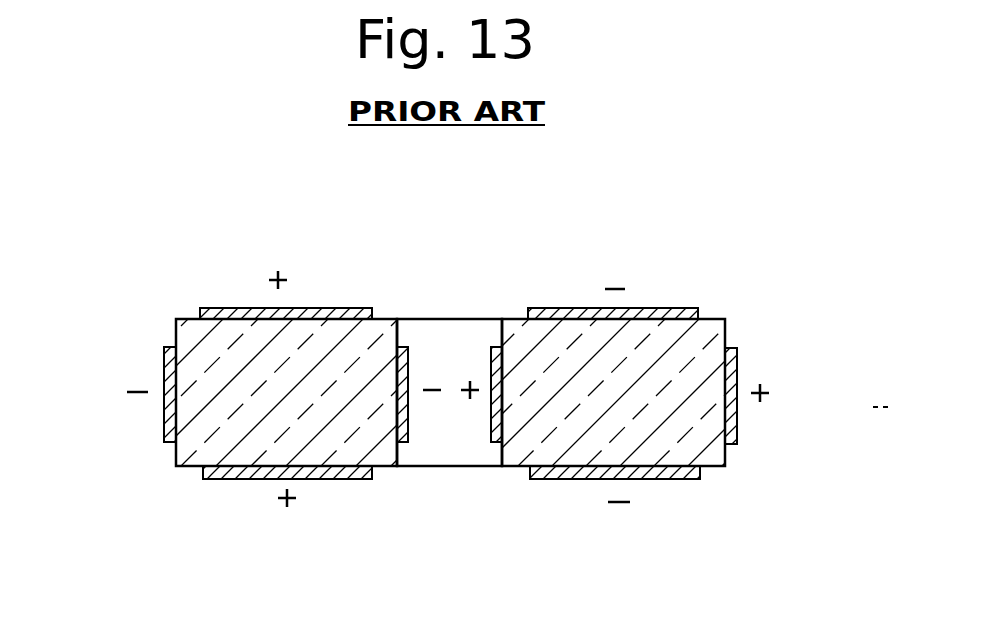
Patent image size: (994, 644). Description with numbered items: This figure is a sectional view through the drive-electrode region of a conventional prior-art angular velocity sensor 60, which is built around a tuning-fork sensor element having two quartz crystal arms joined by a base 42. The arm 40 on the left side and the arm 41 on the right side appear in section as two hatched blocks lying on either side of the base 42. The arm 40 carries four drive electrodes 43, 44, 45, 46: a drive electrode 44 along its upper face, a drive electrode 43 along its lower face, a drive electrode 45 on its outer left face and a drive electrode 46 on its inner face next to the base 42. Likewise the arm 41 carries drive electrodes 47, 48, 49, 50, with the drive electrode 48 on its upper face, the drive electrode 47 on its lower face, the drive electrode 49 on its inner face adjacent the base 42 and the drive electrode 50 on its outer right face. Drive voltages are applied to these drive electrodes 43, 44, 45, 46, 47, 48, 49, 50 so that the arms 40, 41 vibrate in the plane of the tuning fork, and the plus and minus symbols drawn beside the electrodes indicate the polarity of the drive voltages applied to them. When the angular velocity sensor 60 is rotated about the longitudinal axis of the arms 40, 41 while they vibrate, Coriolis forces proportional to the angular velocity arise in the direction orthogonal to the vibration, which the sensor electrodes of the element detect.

The arm 40 is at (181, 335).
The arm 41 is at (697, 443).
The base 42 is at (450, 342).
The drive electrode 43 is at (235, 476).
The drive electrode 44 is at (323, 308).
The drive electrode 45 is at (170, 418).
The drive electrode 46 is at (410, 440).
The drive electrode 47 is at (667, 483).
The drive electrode 48 is at (645, 308).
The drive electrode 49 is at (497, 440).
The drive electrode 50 is at (735, 368).
The angular velocity sensor 60 is at (490, 303).